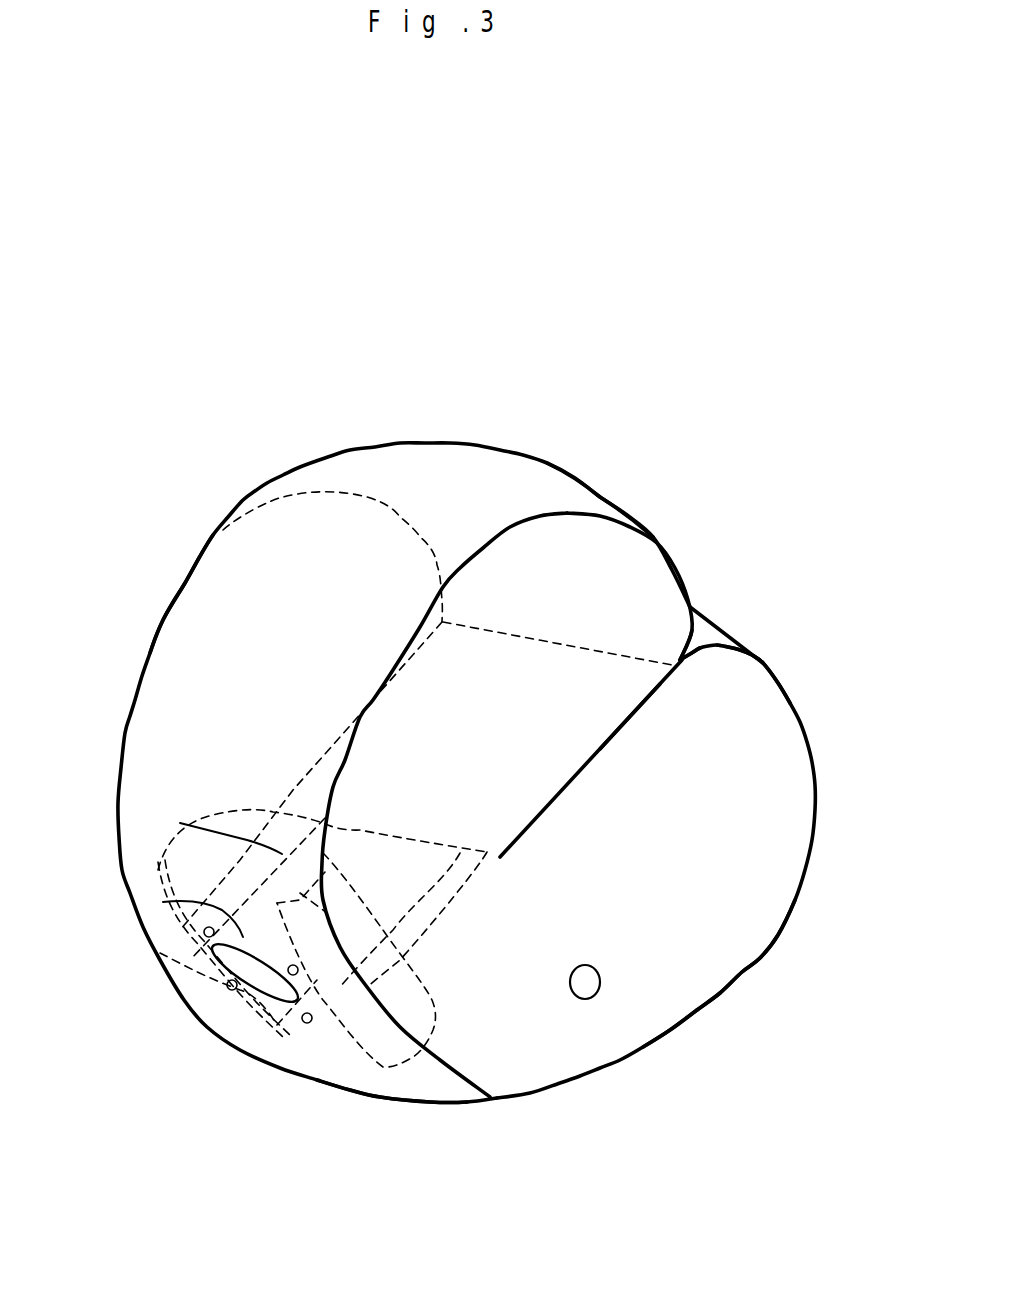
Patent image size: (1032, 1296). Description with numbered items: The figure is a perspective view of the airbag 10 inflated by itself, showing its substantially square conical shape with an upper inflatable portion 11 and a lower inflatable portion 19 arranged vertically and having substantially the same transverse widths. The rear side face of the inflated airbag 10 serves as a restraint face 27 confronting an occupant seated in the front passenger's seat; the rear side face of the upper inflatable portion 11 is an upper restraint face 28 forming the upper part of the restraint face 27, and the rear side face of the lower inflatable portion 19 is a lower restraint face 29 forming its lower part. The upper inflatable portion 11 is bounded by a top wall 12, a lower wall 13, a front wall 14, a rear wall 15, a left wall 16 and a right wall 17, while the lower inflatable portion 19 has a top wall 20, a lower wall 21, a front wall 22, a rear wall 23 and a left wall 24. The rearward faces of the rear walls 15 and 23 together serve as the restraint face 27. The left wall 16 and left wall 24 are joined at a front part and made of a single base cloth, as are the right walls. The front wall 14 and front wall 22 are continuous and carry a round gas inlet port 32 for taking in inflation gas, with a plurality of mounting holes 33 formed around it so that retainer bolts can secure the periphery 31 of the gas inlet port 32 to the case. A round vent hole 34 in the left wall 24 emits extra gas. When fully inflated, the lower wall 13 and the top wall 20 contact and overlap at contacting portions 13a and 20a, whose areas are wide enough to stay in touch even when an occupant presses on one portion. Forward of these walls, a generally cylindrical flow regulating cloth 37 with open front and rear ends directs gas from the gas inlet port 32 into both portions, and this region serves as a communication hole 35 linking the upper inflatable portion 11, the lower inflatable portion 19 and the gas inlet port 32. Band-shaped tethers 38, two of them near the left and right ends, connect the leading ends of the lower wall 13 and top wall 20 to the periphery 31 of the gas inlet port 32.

The airbag 10 is at (723, 572).
The upper inflatable portion 11 is at (488, 438).
The top wall 12 is at (260, 553).
The lower wall 13 is at (687, 640).
The contacting portion 13a is at (592, 757).
The front wall 14 is at (163, 929).
The rear wall 15 is at (580, 491).
The left wall 16 is at (493, 577).
The right wall 17 is at (197, 593).
The lower inflatable portion 19 is at (820, 773).
The top wall 20 is at (690, 660).
The contacting portion 20a is at (625, 730).
The lower wall 21 is at (650, 993).
The front wall 22 is at (402, 1082).
The rear wall 23 is at (765, 662).
The left wall 24 is at (697, 960).
The restraint face 27 is at (742, 622).
The upper restraint face 28 is at (600, 500).
The lower restraint face 29 is at (753, 674).
The periphery of the gas inlet port 31 is at (163, 902).
The gas inlet port 32 is at (262, 978).
The mounting holes 33 is at (232, 985).
The vent hole 34 is at (600, 987).
The communication hole 35 is at (383, 887).
The flow regulating cloth 37 is at (327, 913).
The tethers 38 is at (232, 860).